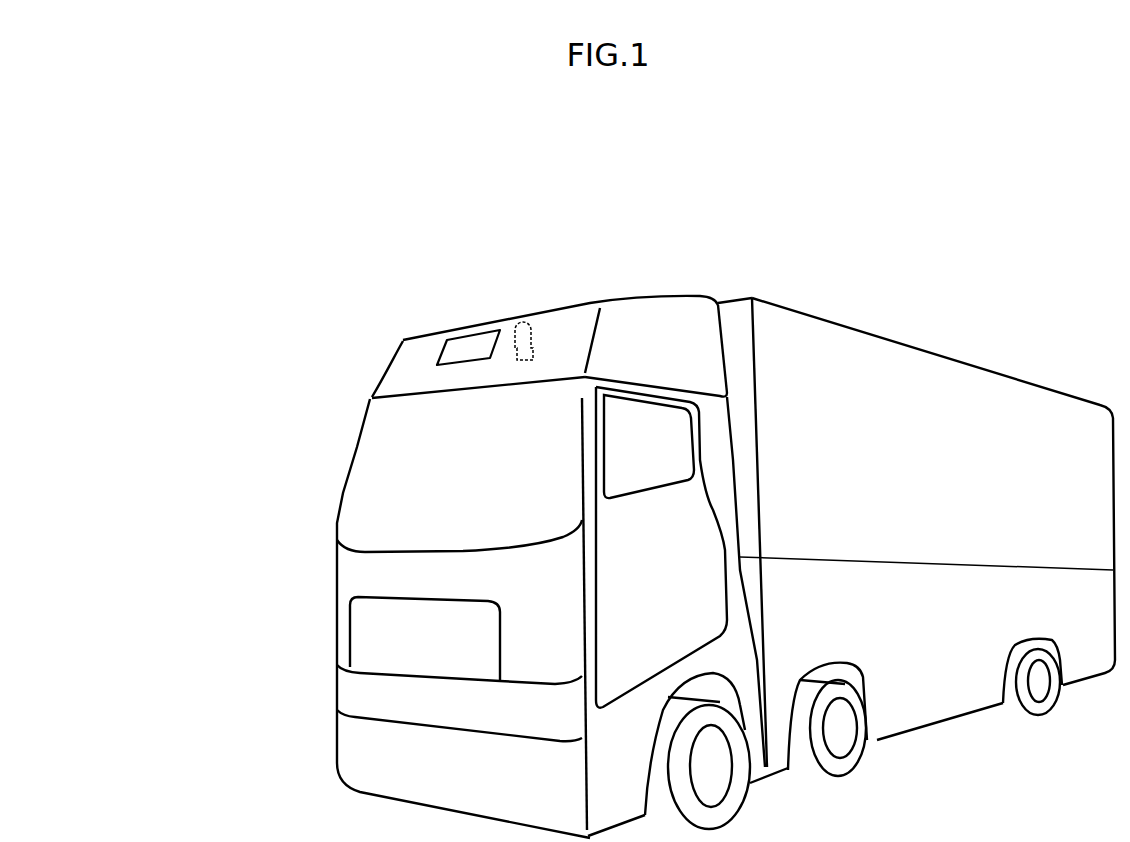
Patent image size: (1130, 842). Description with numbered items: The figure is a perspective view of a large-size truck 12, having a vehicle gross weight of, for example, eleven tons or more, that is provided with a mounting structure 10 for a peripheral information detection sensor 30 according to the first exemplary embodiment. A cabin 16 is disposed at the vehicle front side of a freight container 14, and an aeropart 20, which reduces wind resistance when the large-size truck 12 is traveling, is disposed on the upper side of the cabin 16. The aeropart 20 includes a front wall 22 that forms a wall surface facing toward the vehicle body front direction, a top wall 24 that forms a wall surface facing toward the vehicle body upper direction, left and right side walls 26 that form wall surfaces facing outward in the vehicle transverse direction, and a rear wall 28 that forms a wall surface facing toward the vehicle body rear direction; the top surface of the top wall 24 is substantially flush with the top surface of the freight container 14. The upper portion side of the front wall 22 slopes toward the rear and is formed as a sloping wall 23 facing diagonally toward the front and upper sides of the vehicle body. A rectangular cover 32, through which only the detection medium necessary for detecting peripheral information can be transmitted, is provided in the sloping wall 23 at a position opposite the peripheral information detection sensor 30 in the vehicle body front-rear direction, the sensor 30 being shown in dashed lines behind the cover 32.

The mounting structure 10 is at (503, 303).
The large-size truck 12 is at (714, 261).
The freight container 14 is at (963, 362).
The cabin 16 is at (335, 565).
The aeropart 20 is at (403, 344).
The front wall 22 is at (465, 378).
The sloping wall 23 is at (396, 352).
The top wall 24 is at (648, 297).
The side walls 26 is at (690, 333).
The rear wall 28 is at (723, 357).
The peripheral information detection sensor 30 is at (530, 339).
The rectangular cover 32 is at (465, 343).